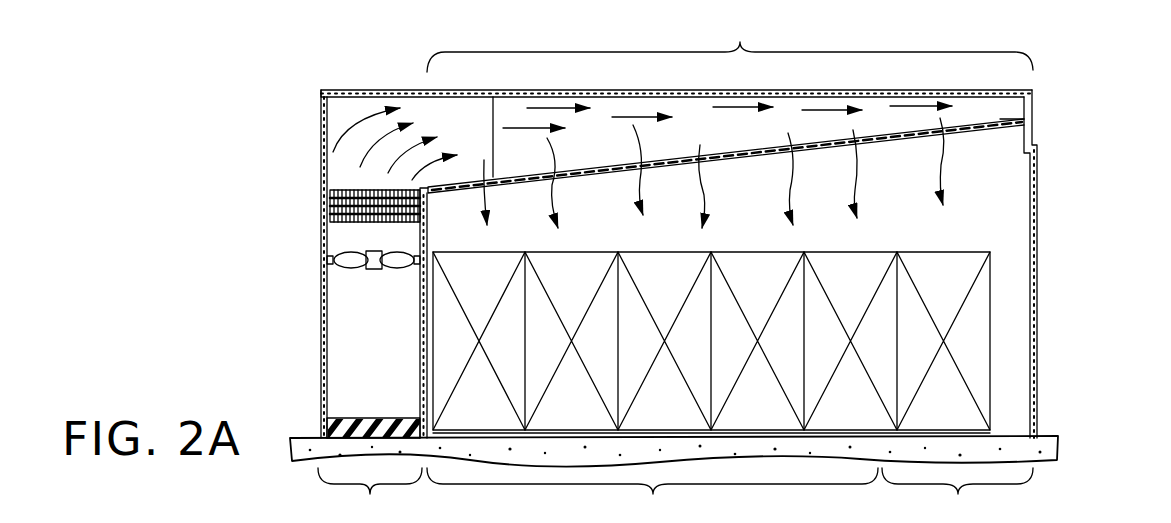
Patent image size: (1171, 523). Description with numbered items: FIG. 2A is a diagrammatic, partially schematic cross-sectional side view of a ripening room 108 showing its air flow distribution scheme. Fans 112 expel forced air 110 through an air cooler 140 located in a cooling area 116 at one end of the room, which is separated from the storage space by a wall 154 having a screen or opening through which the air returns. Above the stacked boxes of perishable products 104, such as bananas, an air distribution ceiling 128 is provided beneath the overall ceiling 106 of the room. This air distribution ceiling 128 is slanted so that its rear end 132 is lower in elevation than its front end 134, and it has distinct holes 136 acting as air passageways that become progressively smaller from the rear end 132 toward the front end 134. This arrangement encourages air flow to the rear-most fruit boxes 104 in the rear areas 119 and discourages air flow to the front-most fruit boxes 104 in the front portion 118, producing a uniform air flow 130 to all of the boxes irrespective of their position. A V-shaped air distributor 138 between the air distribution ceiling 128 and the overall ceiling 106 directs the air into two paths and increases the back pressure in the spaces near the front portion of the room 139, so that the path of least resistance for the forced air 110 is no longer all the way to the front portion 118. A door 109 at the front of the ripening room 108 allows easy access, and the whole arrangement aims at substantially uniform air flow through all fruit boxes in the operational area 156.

The boxes of perishable products 104 is at (457, 285).
The overall ceiling 106 is at (908, 89).
The ripening room 108 is at (1046, 370).
The door 109 is at (1037, 252).
The forced air 110 is at (513, 127).
The fans 112 is at (347, 265).
The cooling area 116 is at (381, 467).
The front portion 118 is at (957, 495).
The rear areas 119 is at (652, 495).
The air distribution ceiling 128 is at (682, 160).
The uniform air flow 130 is at (704, 178).
The rear end 132 is at (433, 200).
The front end 134 is at (1018, 122).
The holes 136 is at (780, 140).
The V-shaped air distributor 138 is at (572, 153).
The front portion spaces 139 is at (1002, 100).
The air cooler 140 is at (328, 198).
The wall 154 is at (423, 313).
The operational area 156 is at (730, 43).